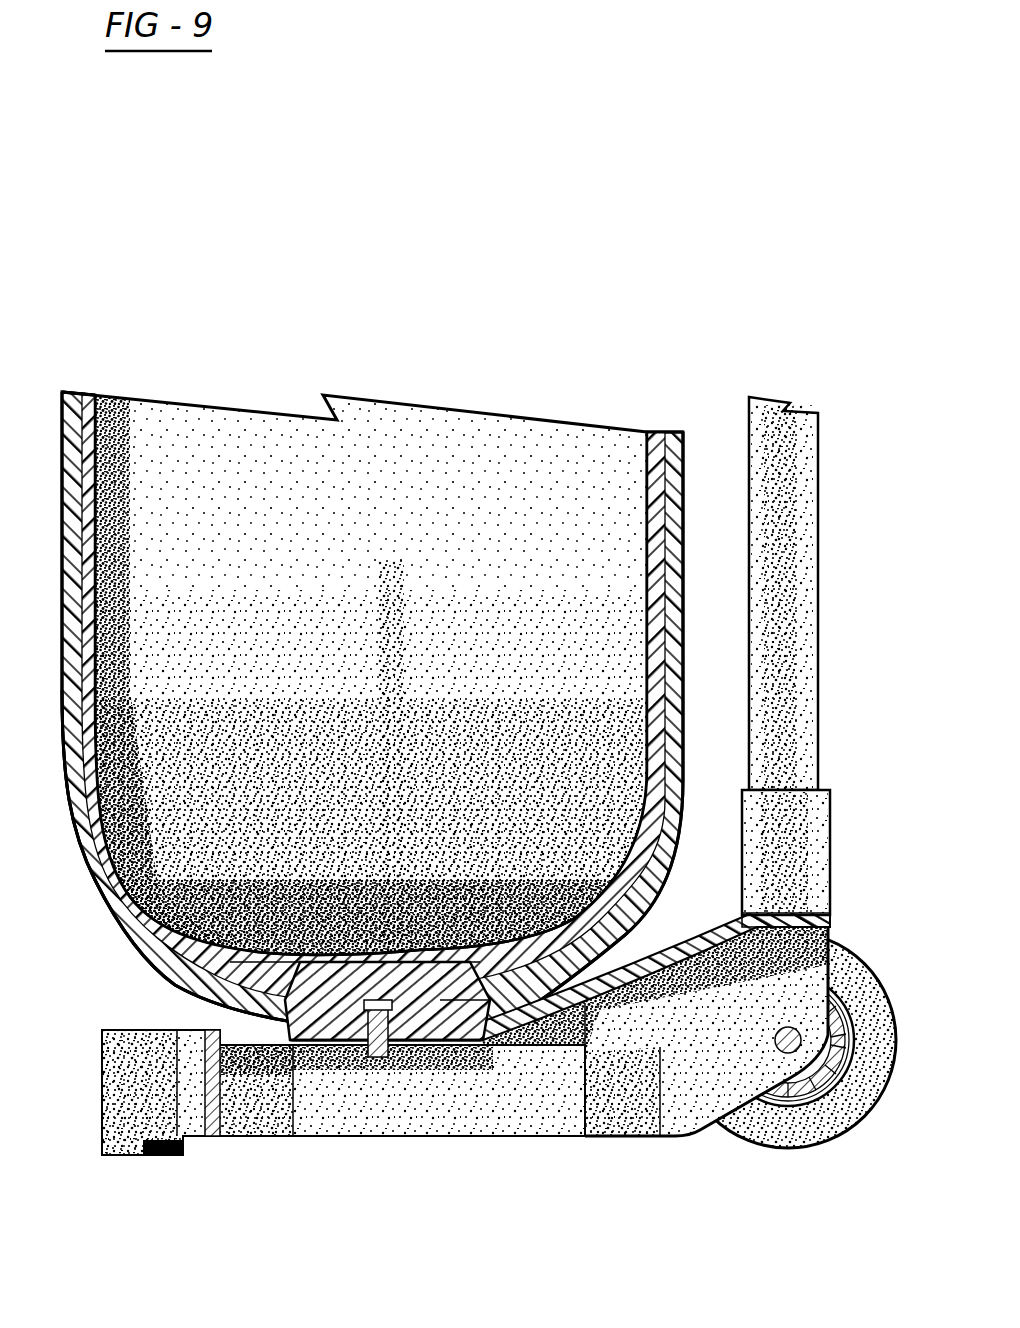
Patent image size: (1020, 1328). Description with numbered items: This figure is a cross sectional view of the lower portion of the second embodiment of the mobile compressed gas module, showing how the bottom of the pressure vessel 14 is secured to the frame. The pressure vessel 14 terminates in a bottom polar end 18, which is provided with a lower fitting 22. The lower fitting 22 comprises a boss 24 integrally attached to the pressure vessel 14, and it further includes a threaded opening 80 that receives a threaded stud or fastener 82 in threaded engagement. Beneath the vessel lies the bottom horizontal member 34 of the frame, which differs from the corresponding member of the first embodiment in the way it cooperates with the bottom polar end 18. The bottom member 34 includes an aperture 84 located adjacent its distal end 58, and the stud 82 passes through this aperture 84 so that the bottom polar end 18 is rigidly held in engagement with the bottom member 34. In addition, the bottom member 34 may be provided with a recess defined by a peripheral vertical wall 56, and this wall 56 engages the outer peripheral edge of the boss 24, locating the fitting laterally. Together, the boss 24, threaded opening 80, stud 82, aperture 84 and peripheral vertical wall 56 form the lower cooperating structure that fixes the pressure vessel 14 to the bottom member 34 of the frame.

The pressure vessel 14 is at (56, 430).
The bottom polar end 18 is at (128, 940).
The lower fitting 22 is at (286, 1020).
The distal end 58 is at (222, 1112).
The peripheral vertical wall 56 is at (293, 1047).
The aperture 84 is at (376, 1060).
The threaded stud 82 is at (397, 1065).
The threaded opening 80 is at (425, 1062).
The boss 24 is at (490, 1053).
The bottom horizontal member 34 is at (634, 1140).